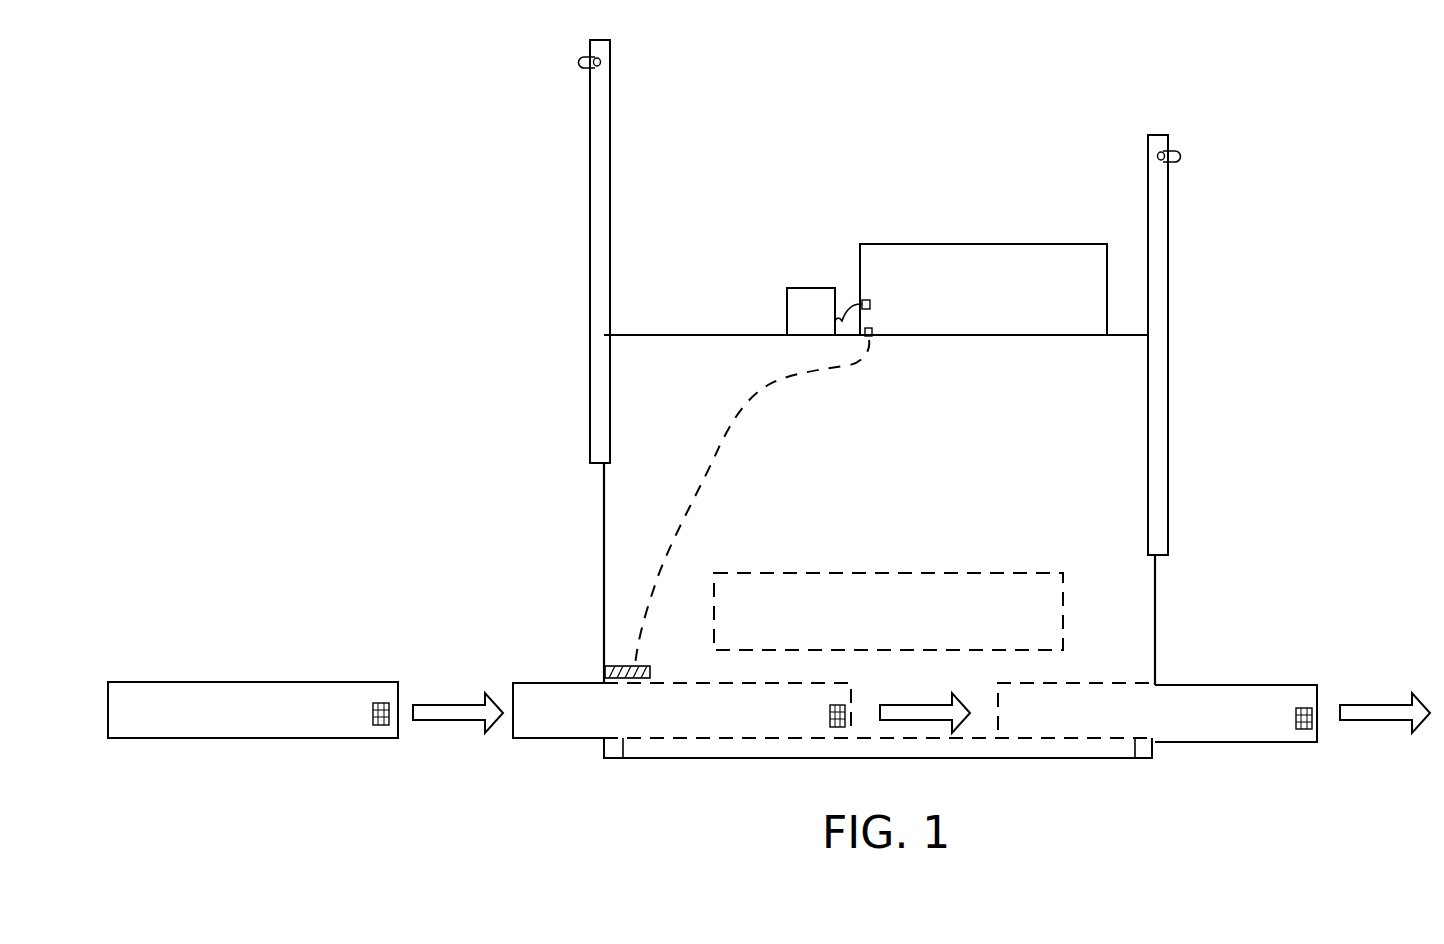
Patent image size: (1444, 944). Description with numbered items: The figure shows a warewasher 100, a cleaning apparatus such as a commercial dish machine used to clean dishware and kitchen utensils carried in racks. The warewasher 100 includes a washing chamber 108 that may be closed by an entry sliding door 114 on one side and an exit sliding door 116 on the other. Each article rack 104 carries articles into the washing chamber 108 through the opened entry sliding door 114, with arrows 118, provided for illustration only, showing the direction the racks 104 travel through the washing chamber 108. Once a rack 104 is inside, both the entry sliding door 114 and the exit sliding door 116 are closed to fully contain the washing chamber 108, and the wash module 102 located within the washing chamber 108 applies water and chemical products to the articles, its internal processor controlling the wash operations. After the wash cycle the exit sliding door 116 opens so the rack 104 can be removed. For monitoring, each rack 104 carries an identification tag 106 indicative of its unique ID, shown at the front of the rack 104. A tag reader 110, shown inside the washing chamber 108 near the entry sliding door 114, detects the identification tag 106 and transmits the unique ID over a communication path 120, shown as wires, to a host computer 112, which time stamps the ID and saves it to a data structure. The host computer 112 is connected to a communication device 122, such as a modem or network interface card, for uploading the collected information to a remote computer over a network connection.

The warewasher 100 is at (745, 335).
The wash module 102 is at (898, 638).
The article rack 104 is at (305, 682).
The identification tag 106 is at (374, 718).
The washing chamber 108 is at (900, 513).
The tag reader 110 is at (612, 665).
The host computer 112 is at (998, 328).
The entry sliding door 114 is at (590, 170).
The exit sliding door 116 is at (1168, 318).
The arrows 118 is at (460, 705).
The communication path 120 is at (730, 428).
The communication device 122 is at (797, 287).